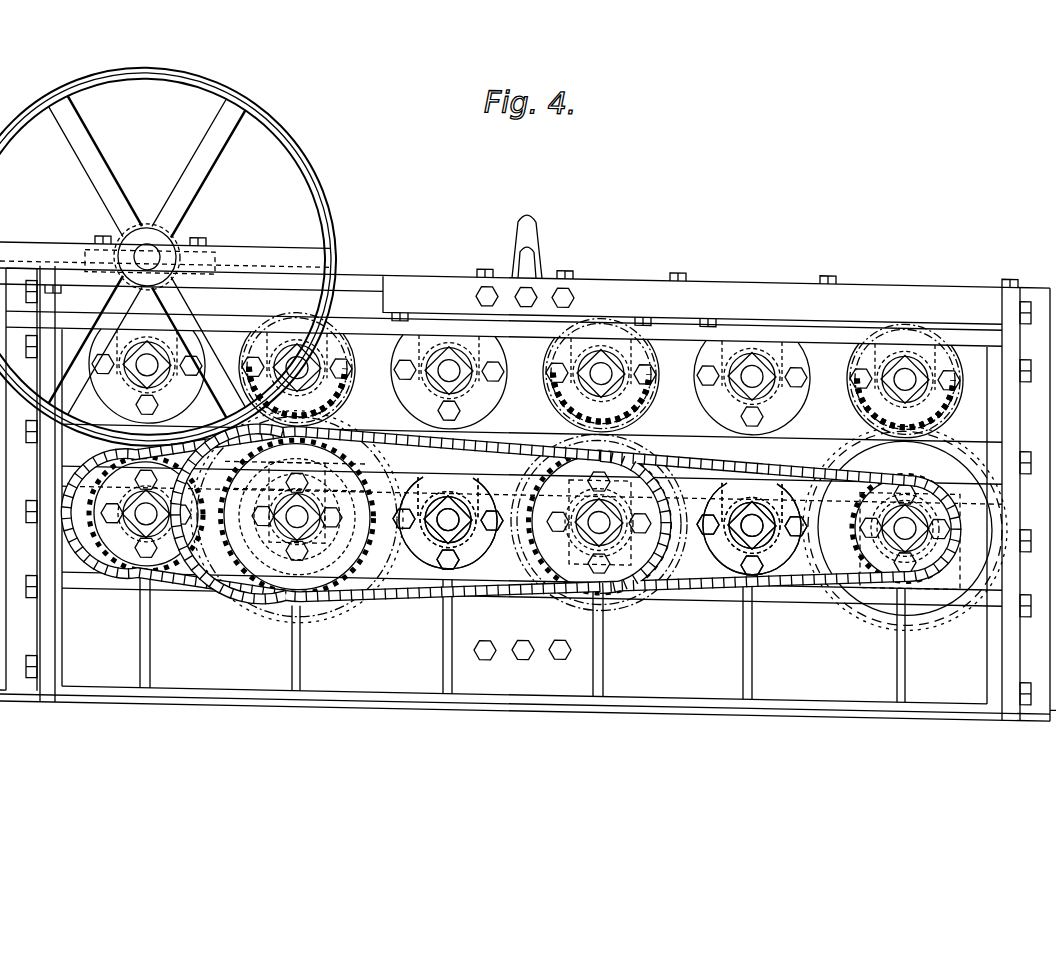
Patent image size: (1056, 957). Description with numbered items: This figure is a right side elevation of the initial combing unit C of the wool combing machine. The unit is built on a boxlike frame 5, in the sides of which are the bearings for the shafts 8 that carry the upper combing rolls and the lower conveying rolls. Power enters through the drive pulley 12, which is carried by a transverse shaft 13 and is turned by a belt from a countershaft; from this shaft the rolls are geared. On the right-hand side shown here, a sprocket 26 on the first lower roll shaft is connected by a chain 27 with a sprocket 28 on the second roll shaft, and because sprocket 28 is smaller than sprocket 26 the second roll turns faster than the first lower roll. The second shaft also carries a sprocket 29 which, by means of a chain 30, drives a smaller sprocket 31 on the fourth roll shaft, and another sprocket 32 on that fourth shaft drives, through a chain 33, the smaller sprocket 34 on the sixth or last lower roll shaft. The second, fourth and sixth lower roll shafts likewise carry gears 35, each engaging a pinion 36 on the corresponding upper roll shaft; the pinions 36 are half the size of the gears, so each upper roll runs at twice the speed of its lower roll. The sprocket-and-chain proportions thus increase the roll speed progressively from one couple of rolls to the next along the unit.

The frame 5 is at (522, 693).
The shaft 8 is at (147, 368).
The drive pulley 12 is at (145, 70).
The transverse shaft 13 is at (147, 252).
The sprocket 26 is at (176, 575).
The chain 27 is at (207, 578).
The sprocket 28 is at (282, 600).
The sprocket 29 is at (333, 566).
The chain 30 is at (505, 578).
The sprocket 31 is at (560, 561).
The sprocket 32 is at (680, 579).
The chain 33 is at (810, 572).
The sprocket 34 is at (885, 548).
The gear 35 is at (350, 416).
The pinion 36 is at (348, 388).
The combing unit C is at (593, 248).